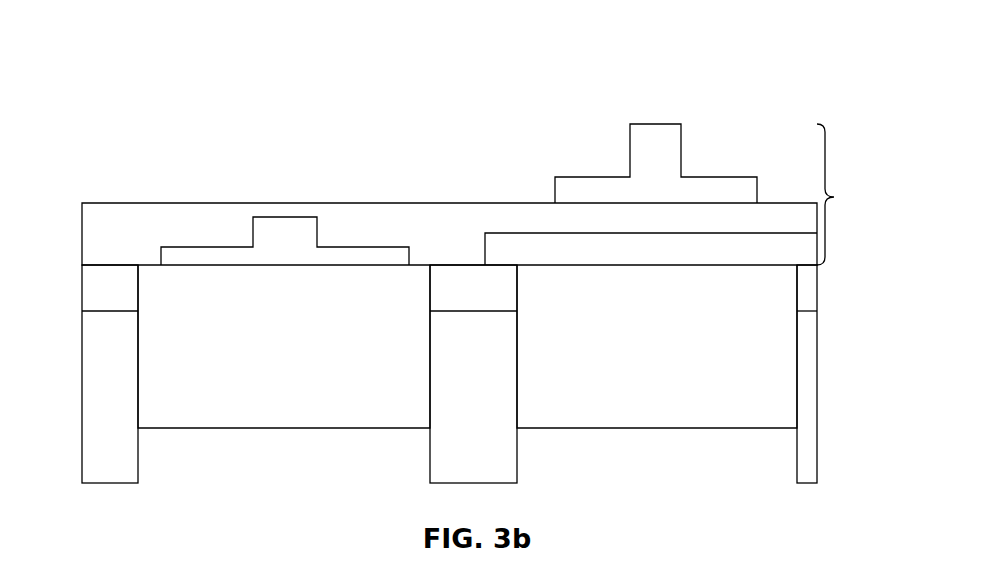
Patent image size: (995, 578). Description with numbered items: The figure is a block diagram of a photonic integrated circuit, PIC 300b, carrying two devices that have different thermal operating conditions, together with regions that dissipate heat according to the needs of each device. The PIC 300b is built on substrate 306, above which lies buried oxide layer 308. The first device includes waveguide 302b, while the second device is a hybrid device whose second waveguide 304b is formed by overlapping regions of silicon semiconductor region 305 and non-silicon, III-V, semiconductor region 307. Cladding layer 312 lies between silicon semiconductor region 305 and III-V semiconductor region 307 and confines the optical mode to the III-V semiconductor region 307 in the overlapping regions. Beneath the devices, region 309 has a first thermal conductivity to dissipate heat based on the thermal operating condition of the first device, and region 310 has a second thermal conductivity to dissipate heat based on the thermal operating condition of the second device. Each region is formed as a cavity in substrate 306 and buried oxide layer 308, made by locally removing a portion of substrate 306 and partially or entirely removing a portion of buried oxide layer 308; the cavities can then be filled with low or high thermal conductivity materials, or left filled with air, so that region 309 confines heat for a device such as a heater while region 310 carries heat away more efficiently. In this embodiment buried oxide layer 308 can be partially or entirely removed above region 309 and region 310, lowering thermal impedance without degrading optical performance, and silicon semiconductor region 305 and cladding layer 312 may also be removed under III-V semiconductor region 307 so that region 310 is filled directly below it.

The PIC 300b is at (513, 100).
The waveguide 302b is at (263, 247).
The second waveguide 304b is at (851, 194).
The silicon semiconductor region 305 is at (640, 257).
The substrate 306 is at (92, 391).
The III-V semiconductor region 307 is at (640, 184).
The buried oxide layer 308 is at (82, 282).
The region 309 is at (268, 357).
The region 310 is at (640, 357).
The cladding layer 312 is at (423, 233).